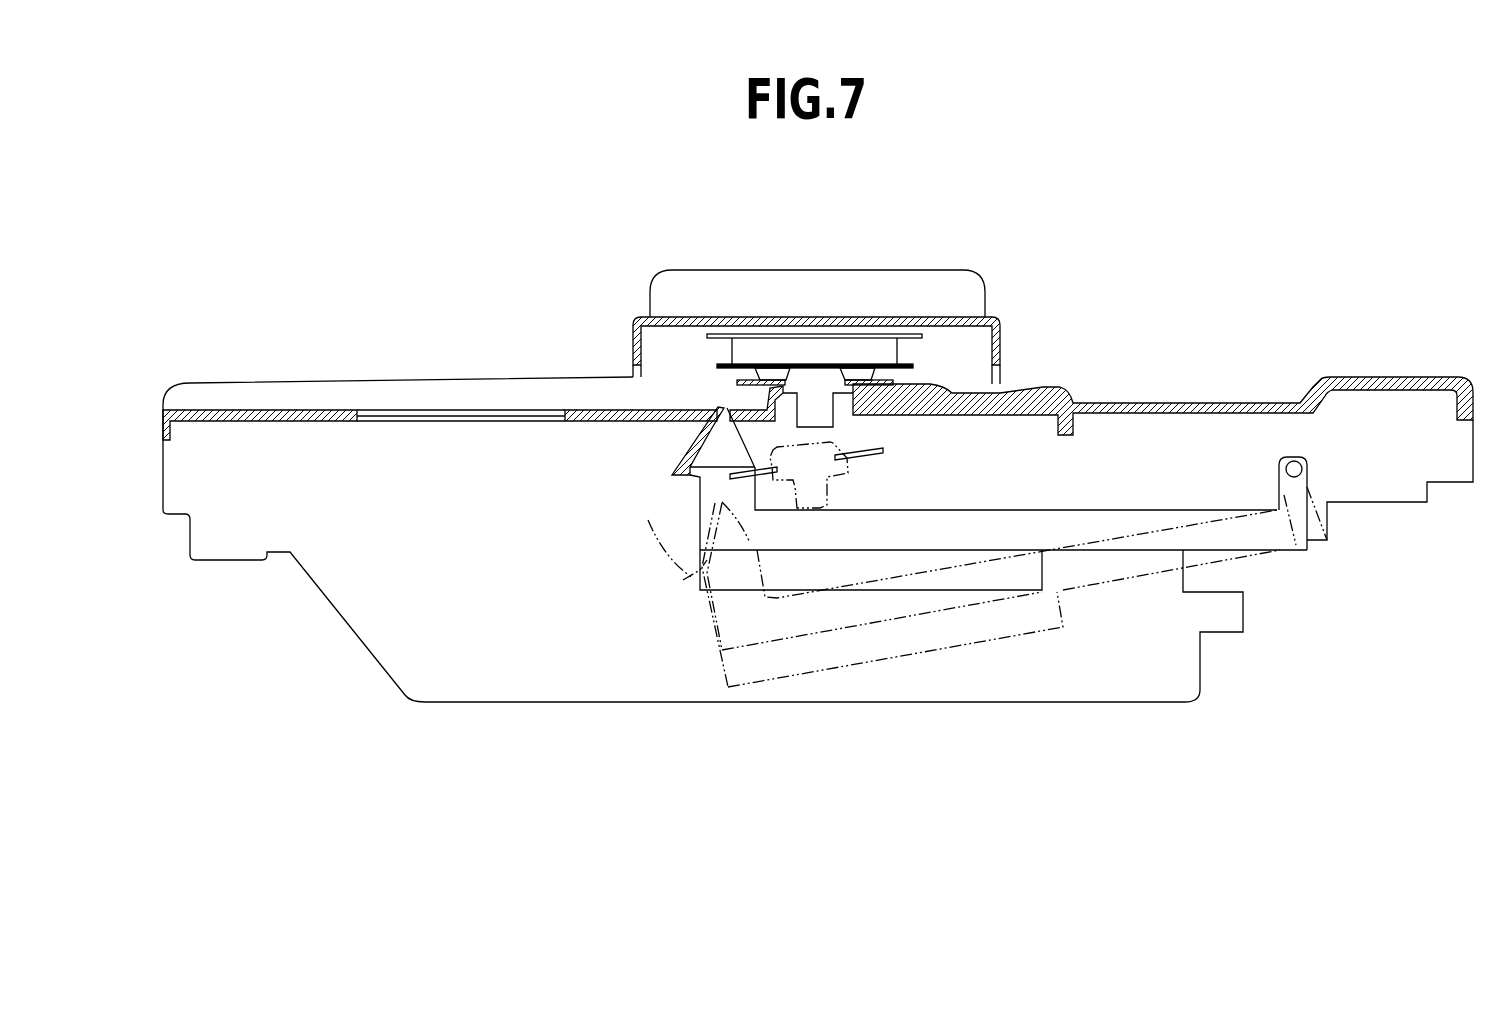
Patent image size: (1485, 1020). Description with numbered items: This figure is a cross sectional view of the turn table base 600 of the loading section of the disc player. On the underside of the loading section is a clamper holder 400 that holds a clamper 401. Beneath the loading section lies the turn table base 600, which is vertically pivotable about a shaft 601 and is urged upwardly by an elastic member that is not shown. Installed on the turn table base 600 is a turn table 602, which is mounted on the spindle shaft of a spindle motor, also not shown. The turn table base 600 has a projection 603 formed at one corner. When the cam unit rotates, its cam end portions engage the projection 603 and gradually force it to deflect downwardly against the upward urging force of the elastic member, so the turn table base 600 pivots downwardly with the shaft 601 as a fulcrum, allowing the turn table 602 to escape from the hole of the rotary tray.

The clamper holder 400 is at (1012, 330).
The clamper 401 is at (787, 347).
The turn table base 600 is at (1088, 492).
The shaft 601 is at (1296, 468).
The turn table 602 is at (872, 445).
The projection 603 is at (648, 520).